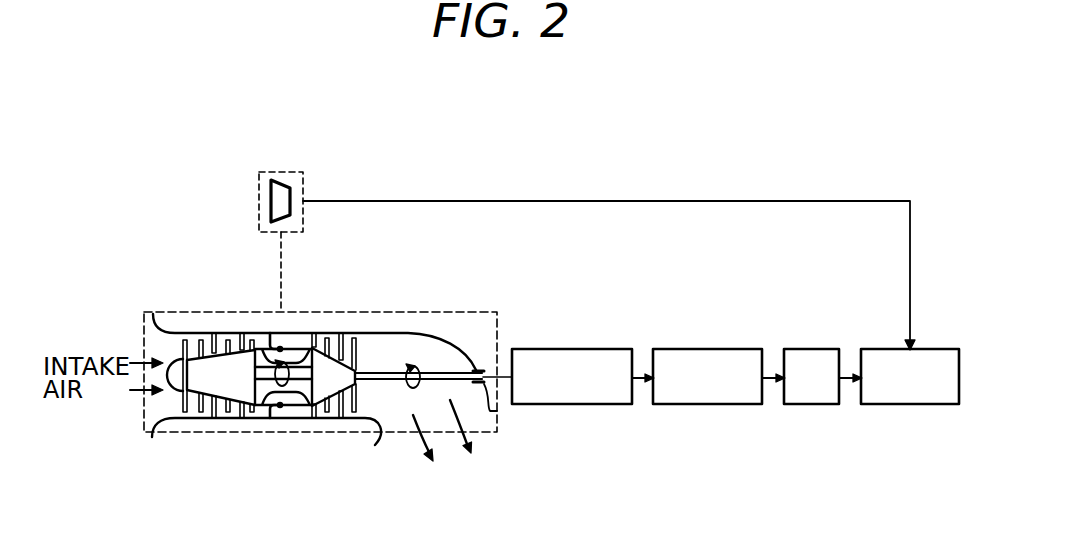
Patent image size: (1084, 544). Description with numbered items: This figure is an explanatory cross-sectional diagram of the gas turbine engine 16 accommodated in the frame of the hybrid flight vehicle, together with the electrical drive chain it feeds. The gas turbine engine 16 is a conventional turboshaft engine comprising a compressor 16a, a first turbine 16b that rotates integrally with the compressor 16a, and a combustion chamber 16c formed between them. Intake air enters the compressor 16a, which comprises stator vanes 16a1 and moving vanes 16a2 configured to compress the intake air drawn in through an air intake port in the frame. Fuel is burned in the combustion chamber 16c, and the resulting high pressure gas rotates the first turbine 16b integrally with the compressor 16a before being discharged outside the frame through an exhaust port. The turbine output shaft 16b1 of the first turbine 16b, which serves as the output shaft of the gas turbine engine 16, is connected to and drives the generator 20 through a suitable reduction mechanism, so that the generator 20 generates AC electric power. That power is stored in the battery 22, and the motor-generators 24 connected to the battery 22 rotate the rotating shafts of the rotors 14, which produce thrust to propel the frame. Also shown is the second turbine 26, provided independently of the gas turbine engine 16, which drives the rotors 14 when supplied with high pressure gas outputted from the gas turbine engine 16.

The rotors 14 is at (922, 347).
The gas turbine engine 16 is at (452, 311).
The compressor 16a is at (241, 384).
The stator vanes 16a1 is at (226, 340).
The moving vanes 16a2 is at (182, 340).
The first turbine 16b is at (368, 369).
The turbine output shaft 16b1 is at (369, 384).
The combustion chamber 16c is at (270, 333).
The generator 20 is at (594, 347).
The battery 22 is at (735, 330).
The motor-generators 24 is at (814, 347).
The second turbine 26 is at (283, 172).